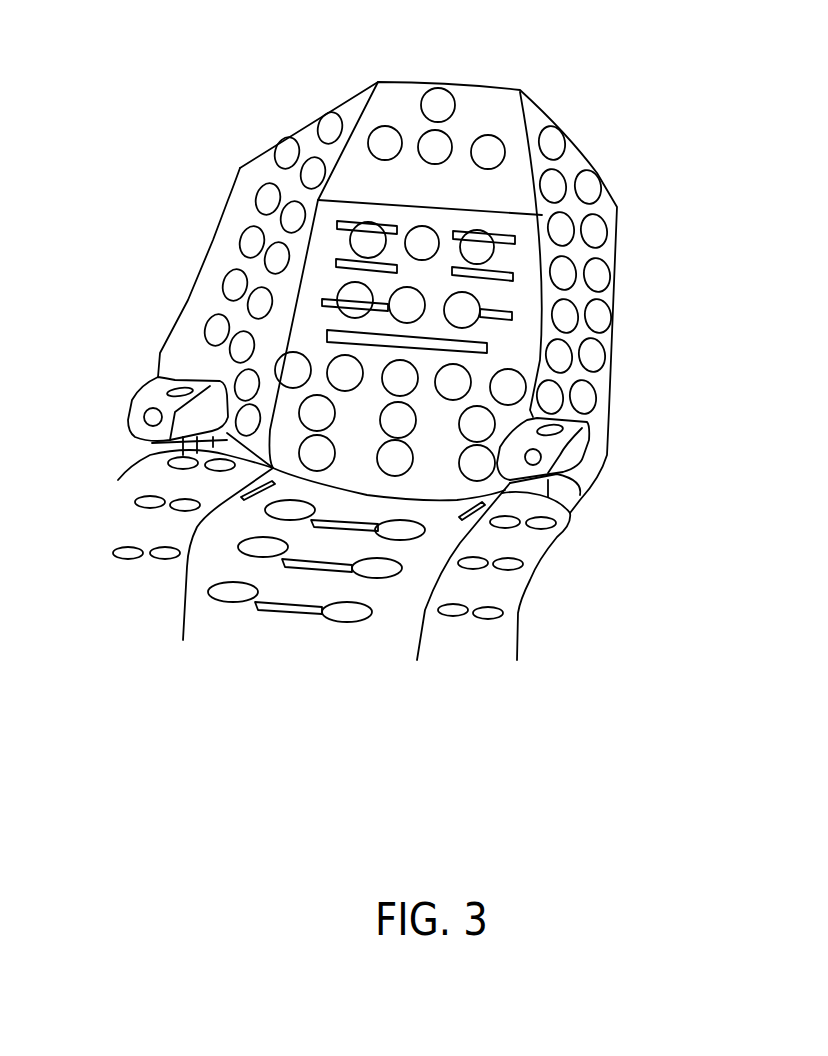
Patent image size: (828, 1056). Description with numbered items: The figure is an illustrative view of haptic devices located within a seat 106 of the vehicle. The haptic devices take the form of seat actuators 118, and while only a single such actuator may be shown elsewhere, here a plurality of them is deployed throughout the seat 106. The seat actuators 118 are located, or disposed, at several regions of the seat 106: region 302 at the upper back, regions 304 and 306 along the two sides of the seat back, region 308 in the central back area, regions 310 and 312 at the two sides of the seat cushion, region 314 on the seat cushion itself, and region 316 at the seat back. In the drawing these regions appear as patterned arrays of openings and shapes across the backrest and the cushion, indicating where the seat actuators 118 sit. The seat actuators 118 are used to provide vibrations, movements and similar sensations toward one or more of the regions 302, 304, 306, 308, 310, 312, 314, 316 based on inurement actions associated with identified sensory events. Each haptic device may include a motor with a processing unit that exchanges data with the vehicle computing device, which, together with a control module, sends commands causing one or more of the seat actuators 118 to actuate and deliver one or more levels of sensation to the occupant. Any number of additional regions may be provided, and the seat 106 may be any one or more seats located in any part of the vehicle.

The seat 106 is at (482, 42).
The seat actuator 118 is at (602, 210).
The region of the seat 302 is at (397, 100).
The region of the seat 304 is at (242, 188).
The region of the seat 306 is at (575, 160).
The region of the seat 308 is at (487, 363).
The region of the seat 310 is at (552, 535).
The region of the seat 312 is at (145, 480).
The region of the seat 314 is at (415, 588).
The region of the seat 316 is at (318, 198).